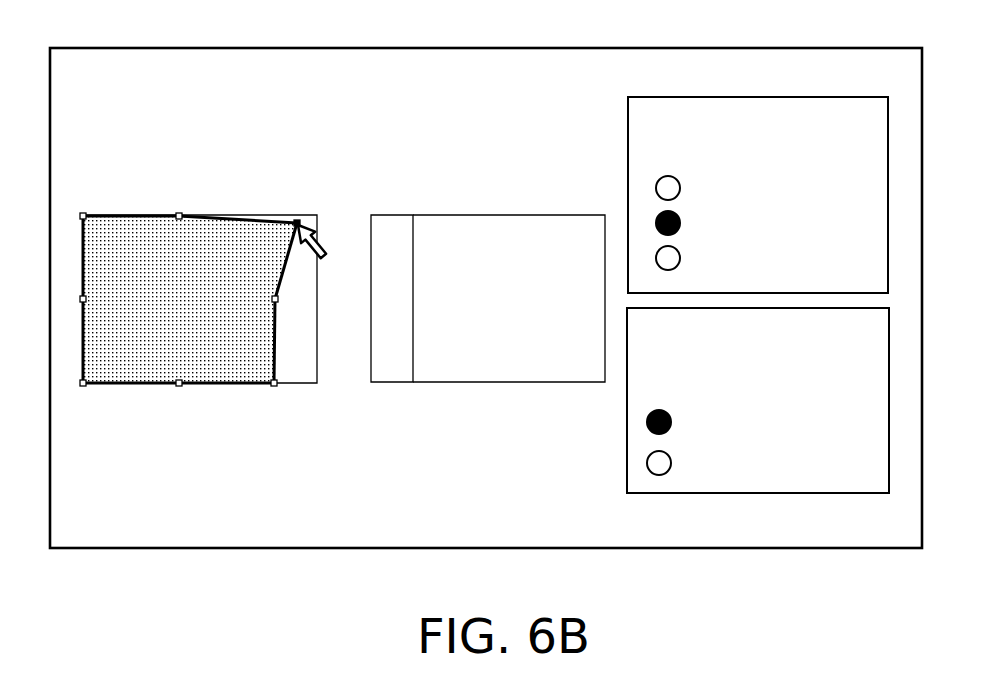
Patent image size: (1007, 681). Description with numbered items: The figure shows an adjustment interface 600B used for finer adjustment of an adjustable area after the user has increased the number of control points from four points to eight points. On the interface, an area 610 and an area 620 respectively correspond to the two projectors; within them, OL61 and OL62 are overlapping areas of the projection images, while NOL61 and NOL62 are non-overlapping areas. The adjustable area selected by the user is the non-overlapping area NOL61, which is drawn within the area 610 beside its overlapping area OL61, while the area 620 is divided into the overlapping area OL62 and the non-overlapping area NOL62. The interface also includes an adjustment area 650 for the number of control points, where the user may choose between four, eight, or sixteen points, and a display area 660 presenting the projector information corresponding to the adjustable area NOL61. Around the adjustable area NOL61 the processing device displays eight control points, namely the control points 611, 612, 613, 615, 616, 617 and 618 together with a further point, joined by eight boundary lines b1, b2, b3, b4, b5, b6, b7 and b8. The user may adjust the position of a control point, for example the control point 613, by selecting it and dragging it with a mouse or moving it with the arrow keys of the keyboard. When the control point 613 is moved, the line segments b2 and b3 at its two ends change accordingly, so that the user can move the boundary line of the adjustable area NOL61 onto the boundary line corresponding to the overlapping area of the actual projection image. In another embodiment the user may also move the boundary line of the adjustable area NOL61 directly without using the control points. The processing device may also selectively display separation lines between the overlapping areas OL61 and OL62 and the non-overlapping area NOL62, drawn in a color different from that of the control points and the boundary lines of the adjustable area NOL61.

The adjustment interface 600B is at (695, 48).
The area 610 is at (210, 346).
The area 620 is at (483, 359).
The adjustment area for the number of control points 650 is at (765, 97).
The display area 660 is at (757, 493).
The control point 611 is at (83, 216).
The control point 612 is at (178, 216).
The control point 613 is at (297, 223).
The control point 615 is at (274, 383).
The control point 616 is at (179, 383).
The control point 617 is at (83, 383).
The control point 618 is at (83, 299).
The boundary line b1 is at (127, 216).
The boundary line b2 is at (247, 219).
The boundary line b3 is at (282, 272).
The boundary line b4 is at (275, 332).
The boundary line b5 is at (230, 382).
The boundary line b6 is at (143, 382).
The boundary line b7 is at (88, 360).
The boundary line b8 is at (87, 262).
The overlapping area OL61 is at (297, 353).
The non-overlapping area NOL61 is at (162, 355).
The overlapping area OL62 is at (390, 355).
The non-overlapping area NOL62 is at (488, 355).